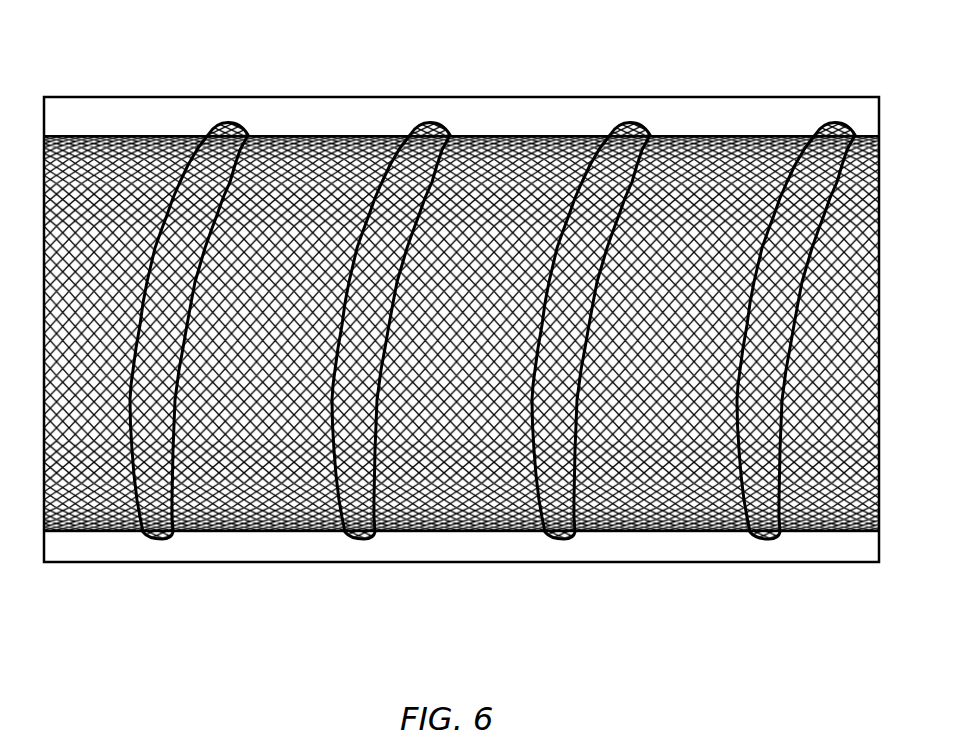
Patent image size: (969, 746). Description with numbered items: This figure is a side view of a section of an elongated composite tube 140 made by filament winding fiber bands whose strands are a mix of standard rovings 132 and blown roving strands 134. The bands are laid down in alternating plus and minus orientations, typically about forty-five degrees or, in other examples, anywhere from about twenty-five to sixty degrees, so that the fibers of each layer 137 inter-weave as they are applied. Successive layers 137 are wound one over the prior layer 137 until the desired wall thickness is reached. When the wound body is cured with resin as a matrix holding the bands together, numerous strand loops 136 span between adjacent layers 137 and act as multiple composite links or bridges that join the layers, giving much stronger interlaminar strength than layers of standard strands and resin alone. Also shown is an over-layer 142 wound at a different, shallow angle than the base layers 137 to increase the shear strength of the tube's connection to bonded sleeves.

The standard rovings 132 is at (730, 170).
The blown roving strands 134 is at (304, 180).
The strand loops 136 is at (108, 180).
The layer 137 is at (93, 490).
The elongated composite tube 140 is at (428, 533).
The over-layer 142 is at (625, 147).